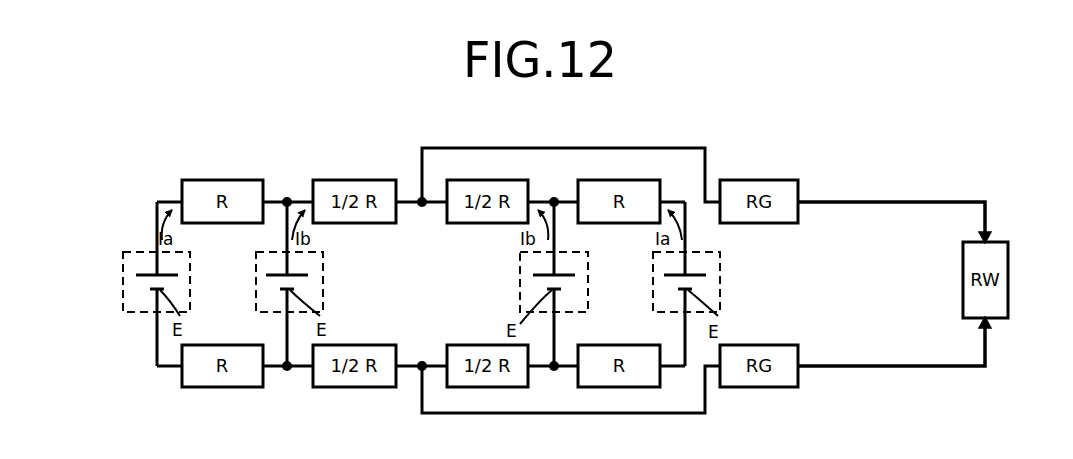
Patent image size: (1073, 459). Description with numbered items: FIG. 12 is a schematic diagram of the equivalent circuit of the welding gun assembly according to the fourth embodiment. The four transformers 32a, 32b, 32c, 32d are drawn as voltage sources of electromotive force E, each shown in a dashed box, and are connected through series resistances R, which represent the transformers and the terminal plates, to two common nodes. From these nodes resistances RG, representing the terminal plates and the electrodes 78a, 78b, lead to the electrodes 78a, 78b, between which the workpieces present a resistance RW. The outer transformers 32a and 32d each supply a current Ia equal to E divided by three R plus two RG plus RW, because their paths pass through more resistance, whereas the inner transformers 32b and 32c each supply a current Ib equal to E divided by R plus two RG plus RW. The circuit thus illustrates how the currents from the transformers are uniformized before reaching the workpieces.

The transformer 32a is at (650, 281).
The transformer 32b is at (516, 280).
The transformer 32c is at (254, 283).
The transformer 32d is at (120, 282).
The electrode 78a is at (985, 215).
The electrode 78b is at (985, 350).